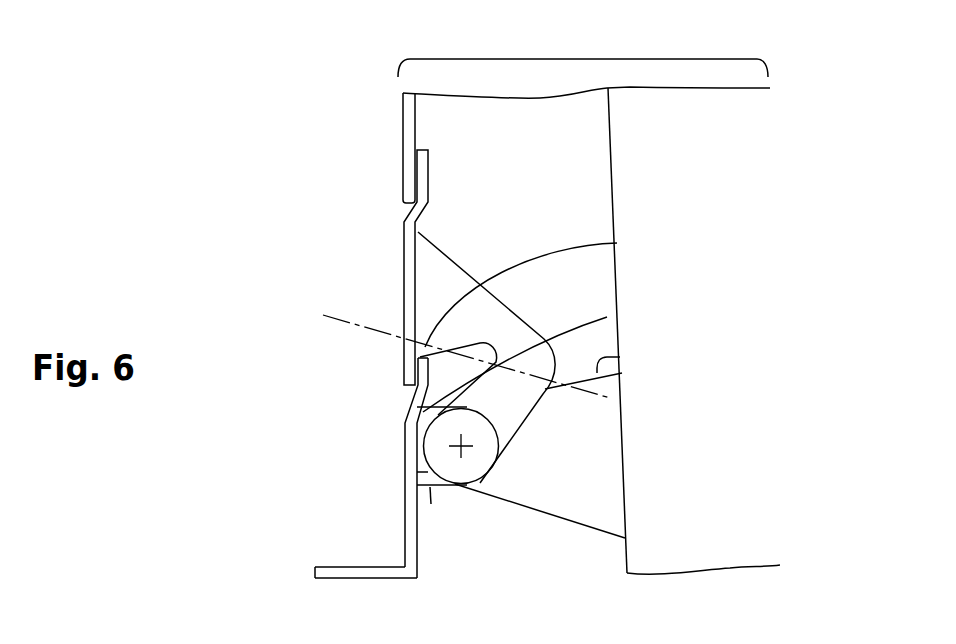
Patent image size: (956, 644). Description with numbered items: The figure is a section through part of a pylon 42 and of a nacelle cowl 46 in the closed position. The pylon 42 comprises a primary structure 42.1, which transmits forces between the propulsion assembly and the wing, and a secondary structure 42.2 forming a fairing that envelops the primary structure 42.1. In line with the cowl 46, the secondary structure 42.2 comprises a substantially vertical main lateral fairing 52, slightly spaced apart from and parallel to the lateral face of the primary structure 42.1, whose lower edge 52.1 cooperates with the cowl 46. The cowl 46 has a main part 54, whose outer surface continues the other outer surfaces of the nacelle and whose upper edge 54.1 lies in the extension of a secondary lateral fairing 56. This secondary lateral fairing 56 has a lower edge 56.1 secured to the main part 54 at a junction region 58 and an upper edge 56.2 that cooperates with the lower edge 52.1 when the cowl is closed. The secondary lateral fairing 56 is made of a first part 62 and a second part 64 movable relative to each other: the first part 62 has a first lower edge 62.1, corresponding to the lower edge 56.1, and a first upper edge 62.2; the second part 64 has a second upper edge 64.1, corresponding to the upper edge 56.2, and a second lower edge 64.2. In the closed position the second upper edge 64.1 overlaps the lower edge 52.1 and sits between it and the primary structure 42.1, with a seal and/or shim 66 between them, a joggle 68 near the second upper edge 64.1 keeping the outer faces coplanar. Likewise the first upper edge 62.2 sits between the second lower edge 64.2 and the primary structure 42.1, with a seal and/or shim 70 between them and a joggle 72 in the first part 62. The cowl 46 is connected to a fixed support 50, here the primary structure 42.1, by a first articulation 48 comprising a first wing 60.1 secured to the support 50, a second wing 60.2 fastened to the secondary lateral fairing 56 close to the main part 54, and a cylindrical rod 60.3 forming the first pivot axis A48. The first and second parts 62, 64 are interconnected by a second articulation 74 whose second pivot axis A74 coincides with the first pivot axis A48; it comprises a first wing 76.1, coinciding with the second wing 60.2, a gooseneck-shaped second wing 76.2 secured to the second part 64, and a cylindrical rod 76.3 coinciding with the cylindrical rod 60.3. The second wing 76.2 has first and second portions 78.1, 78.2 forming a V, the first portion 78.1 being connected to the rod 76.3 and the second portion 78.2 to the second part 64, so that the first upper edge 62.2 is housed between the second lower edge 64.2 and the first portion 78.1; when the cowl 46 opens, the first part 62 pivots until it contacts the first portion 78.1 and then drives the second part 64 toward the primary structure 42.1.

The pylon 42 is at (591, 59).
The primary structure 42.1 is at (608, 165).
The secondary structure 42.2 is at (401, 119).
The cowl 46 is at (318, 562).
The first articulation 48 is at (567, 476).
The fixed support 50 is at (613, 543).
The main lateral fairing 52 is at (417, 148).
The lower edge of the main lateral fairing 52.1 is at (412, 207).
The main part of the cowl 54 is at (328, 578).
The upper edge of the main part 54.1 is at (398, 563).
The secondary lateral fairing 56 is at (397, 364).
The lower edge of the secondary lateral fairing 56.1 is at (417, 565).
The upper edge of the secondary lateral fairing 56.2 is at (425, 152).
The junction region 58 is at (408, 578).
The first wing 60.1 is at (620, 357).
The second wing 60.2 is at (415, 492).
The cylindrical rod 60.3 is at (604, 498).
The first part 62 is at (392, 447).
The first lower edge 62.1 is at (418, 548).
The first upper edge 62.2 is at (420, 364).
The second part 64 is at (391, 258).
The second upper edge 64.1 is at (432, 158).
The second lower edge 64.2 is at (405, 378).
The seal and/or shim 66 is at (418, 148).
The joggle 68 is at (423, 217).
The seal and/or shim 70 is at (617, 243).
The joggle 72 is at (607, 317).
The second articulation 74 is at (461, 446).
The first wing of the second articulation 76.1 is at (430, 489).
The second wing of the second articulation 76.2 is at (490, 313).
The cylindrical rod of the second articulation 76.3 is at (540, 511).
The first portion 78.1 is at (520, 408).
The second portion 78.2 is at (520, 308).
The first pivot axis A48 is at (479, 488).
The second pivot axis A74 is at (462, 450).